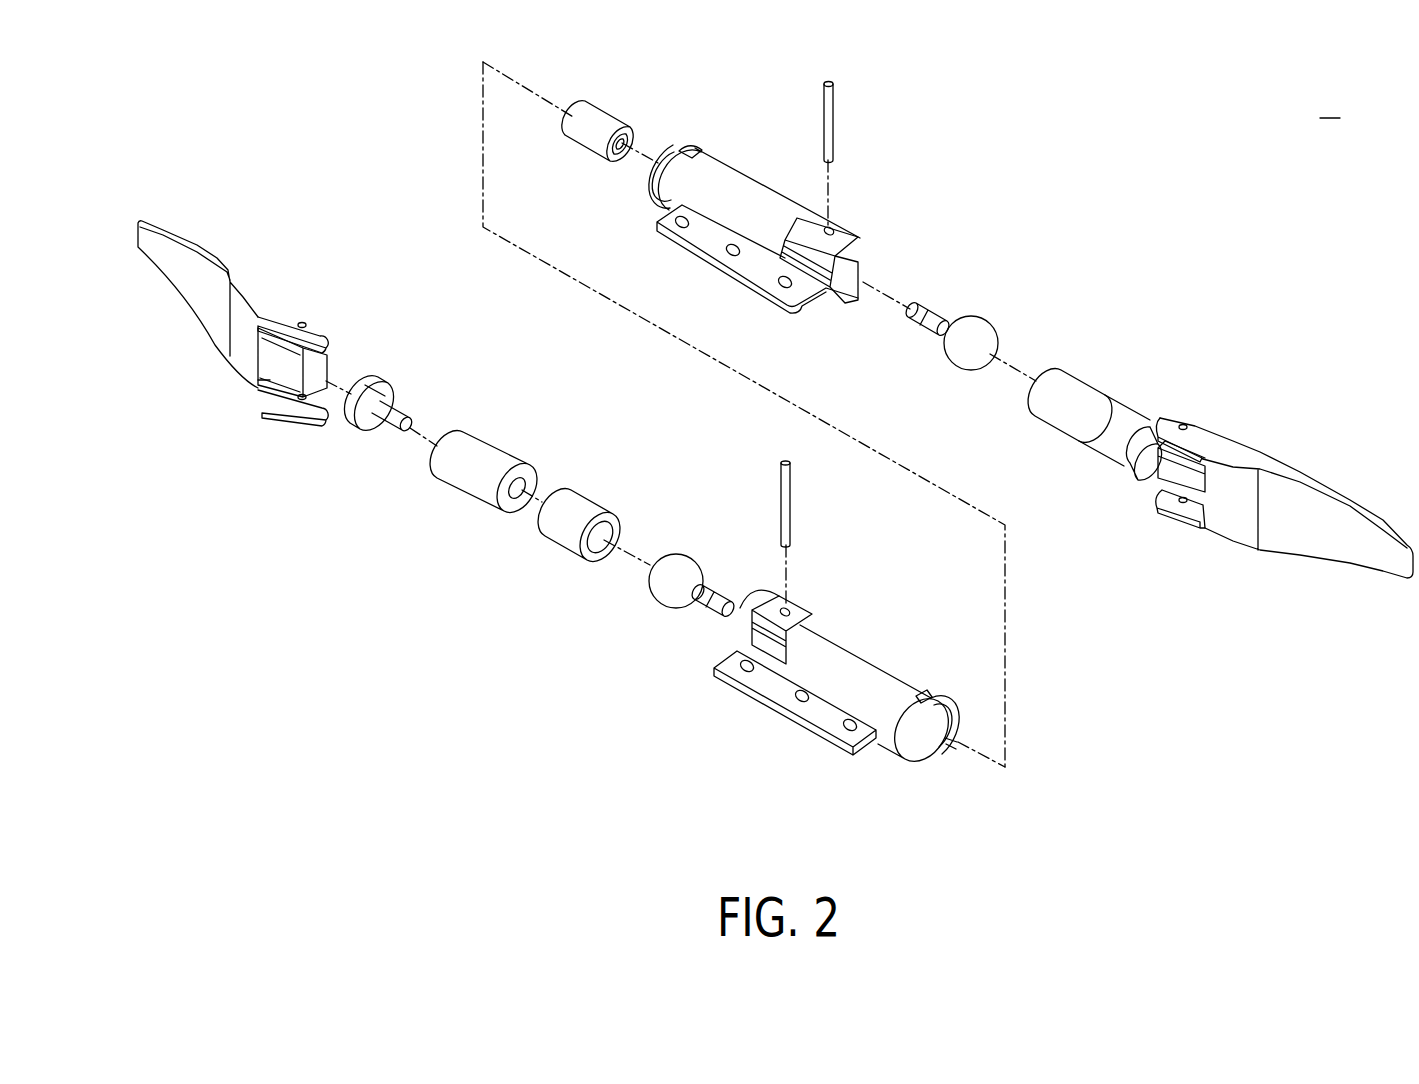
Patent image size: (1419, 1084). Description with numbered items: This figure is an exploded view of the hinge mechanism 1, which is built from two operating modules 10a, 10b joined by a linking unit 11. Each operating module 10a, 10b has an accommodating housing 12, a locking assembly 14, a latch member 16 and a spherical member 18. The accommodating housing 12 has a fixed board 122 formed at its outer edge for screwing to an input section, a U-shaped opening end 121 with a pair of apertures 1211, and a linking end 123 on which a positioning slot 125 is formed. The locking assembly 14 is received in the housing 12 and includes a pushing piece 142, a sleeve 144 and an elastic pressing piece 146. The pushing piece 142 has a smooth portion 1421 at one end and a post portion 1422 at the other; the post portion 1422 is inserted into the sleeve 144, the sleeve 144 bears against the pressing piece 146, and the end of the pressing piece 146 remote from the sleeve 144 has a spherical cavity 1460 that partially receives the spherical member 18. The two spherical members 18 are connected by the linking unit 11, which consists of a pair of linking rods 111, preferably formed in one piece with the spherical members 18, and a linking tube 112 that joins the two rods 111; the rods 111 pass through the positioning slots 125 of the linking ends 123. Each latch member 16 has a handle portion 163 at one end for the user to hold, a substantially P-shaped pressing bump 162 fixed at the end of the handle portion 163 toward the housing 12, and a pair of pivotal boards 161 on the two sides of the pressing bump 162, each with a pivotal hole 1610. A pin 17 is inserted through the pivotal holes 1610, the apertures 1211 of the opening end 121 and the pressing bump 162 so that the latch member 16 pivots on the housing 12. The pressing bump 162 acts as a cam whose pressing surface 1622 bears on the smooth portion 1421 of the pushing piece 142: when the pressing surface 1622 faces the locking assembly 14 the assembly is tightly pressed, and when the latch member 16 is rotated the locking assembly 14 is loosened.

The hinge assembly 1 is at (1330, 103).
The operating module 10a is at (590, 668).
The operating module 10b is at (1112, 205).
The linking unit 11 is at (592, 215).
The linking rod 111 is at (927, 312).
The linking tube 112 is at (590, 140).
The accommodating housing 12 is at (754, 172).
The opening end 121 is at (862, 236).
The aperture 1211 is at (834, 224).
The fixed board 122 is at (752, 266).
The linking end 123 is at (690, 146).
The positioning slot 125 is at (962, 741).
The locking assembly 14 is at (318, 503).
The pushing piece 142 is at (358, 420).
The smooth portion 1421 is at (372, 382).
The post portion 1422 is at (398, 410).
The sleeve 144 is at (474, 482).
The elastic pressing piece 146 is at (562, 540).
The spherical cavity 1460 is at (606, 528).
The latch member 16 is at (774, 383).
The pivotal board 161 is at (284, 310).
The pivotal hole 1610 is at (303, 320).
The pressing bump 162 is at (322, 355).
The pressing surface 1622 is at (257, 390).
The handle portion 163 is at (178, 272).
The pin 17 is at (836, 98).
The spherical member 18 is at (986, 332).